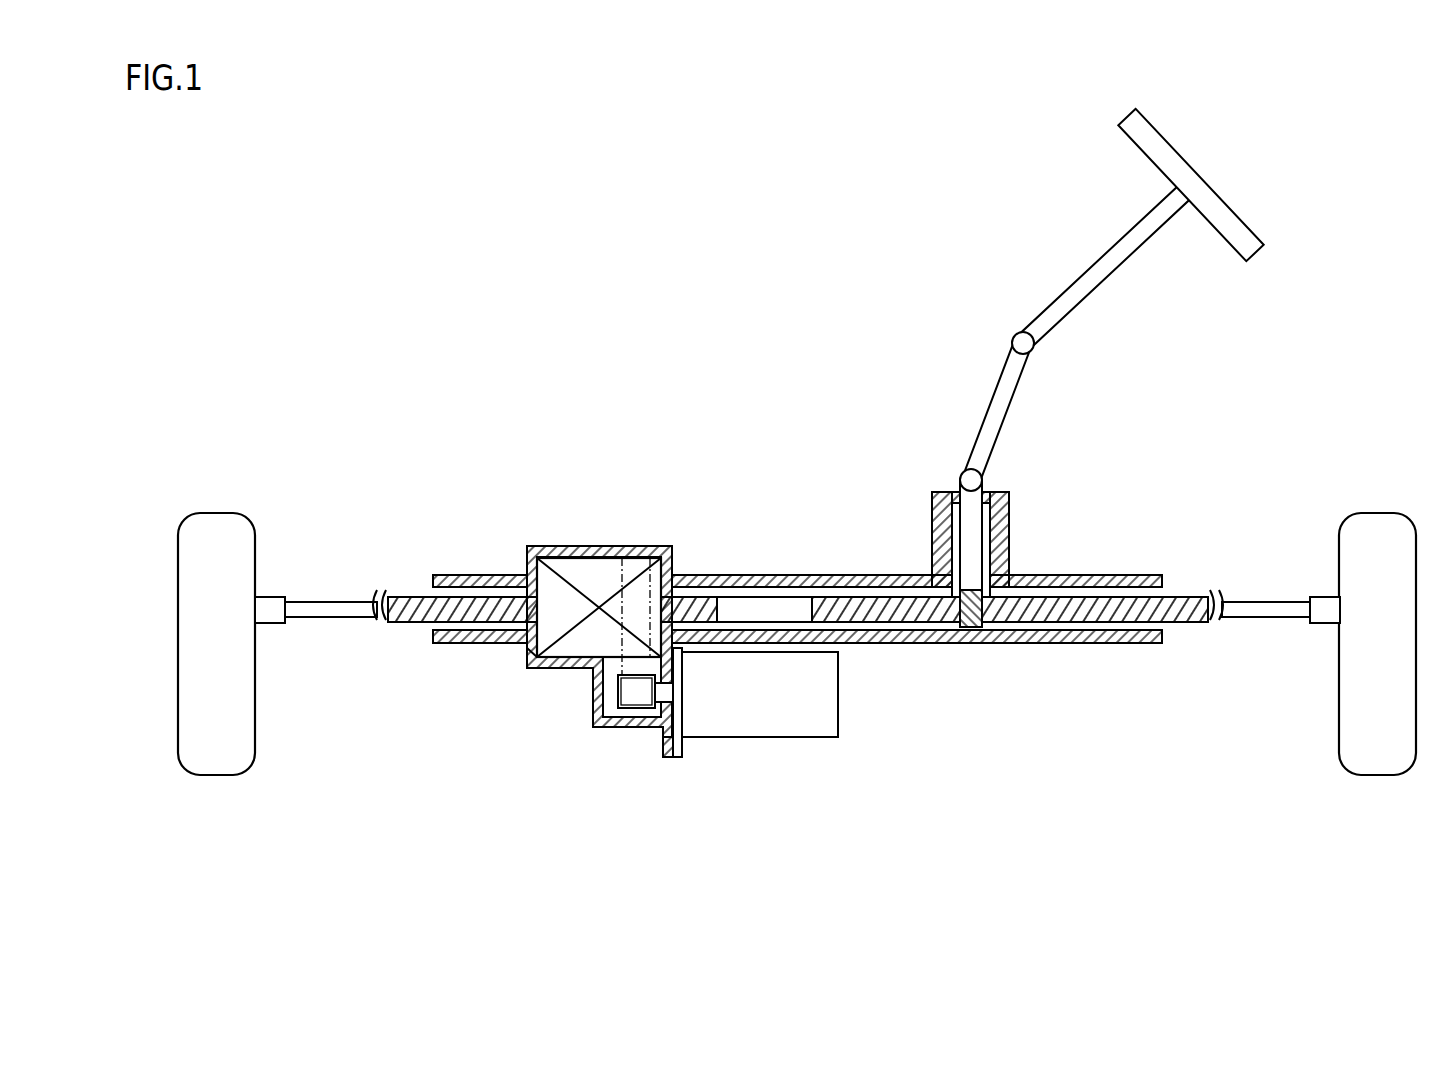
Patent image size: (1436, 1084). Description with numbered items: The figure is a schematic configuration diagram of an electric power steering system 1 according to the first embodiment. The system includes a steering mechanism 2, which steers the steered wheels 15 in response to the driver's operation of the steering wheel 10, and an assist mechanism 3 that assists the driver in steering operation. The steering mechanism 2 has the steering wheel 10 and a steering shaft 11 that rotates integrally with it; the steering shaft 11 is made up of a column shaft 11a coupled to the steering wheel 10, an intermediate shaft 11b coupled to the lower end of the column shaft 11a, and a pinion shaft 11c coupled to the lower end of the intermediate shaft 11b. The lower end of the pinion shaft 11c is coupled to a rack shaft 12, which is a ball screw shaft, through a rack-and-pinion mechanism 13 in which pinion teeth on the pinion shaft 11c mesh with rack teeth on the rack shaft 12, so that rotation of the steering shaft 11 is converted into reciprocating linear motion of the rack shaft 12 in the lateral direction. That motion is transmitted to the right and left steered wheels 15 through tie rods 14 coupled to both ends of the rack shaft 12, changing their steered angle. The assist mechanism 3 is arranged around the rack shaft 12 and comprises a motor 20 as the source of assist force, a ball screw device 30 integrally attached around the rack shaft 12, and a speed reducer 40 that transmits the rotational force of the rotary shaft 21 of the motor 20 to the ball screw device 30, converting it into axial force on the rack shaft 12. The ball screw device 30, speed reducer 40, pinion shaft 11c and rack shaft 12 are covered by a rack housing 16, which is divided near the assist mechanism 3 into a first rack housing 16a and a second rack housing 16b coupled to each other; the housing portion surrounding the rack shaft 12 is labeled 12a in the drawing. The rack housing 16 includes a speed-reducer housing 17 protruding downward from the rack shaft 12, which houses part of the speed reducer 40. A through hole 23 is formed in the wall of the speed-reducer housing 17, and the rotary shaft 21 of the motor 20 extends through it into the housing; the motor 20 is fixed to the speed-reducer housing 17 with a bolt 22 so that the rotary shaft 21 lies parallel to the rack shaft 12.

The electric power steering system 1 is at (810, 247).
The steering mechanism 2 is at (1213, 324).
The assist mechanism 3 is at (684, 543).
The steering wheel 10 is at (1167, 137).
The steering shaft 11 is at (978, 295).
The column shaft 11a is at (1042, 307).
The intermediate shaft 11b is at (988, 402).
The pinion shaft 11c is at (945, 505).
The rack shaft 12 is at (856, 622).
The rack housing 12a is at (488, 602).
The rack-and-pinion mechanism 13 is at (975, 627).
The tie rods 14 is at (334, 620).
The steered wheels 15 is at (219, 512).
The rack housing 16 is at (680, 492).
The first rack housing 16a is at (590, 548).
The second rack housing 16b is at (645, 548).
The speed-reducer housing 17 is at (592, 727).
The motor 20 is at (761, 738).
The rotary shaft 21 is at (683, 705).
The bolt 22 is at (685, 745).
The through hole 23 is at (668, 673).
The ball screw device 30 is at (534, 647).
The speed reducer 40 is at (616, 663).